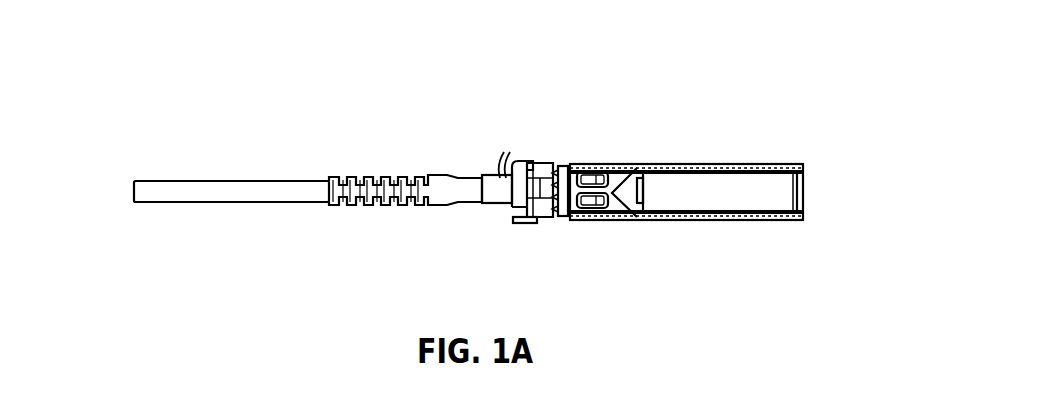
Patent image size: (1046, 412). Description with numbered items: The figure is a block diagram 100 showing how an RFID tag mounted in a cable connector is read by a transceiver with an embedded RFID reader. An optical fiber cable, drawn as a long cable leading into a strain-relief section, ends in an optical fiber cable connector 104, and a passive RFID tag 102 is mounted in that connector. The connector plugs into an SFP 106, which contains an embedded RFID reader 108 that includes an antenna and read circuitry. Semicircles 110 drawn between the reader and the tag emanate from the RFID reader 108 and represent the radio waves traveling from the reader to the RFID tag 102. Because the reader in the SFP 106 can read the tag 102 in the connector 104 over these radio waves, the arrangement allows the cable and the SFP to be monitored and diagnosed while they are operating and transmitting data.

The block diagram 100 is at (157, 63).
The RFID tag 102 is at (482, 175).
The optical fiber cable connector 104 is at (399, 177).
The SFP 106 is at (765, 160).
The embedded RFID reader 108 is at (547, 164).
The semicircles 110 is at (505, 146).